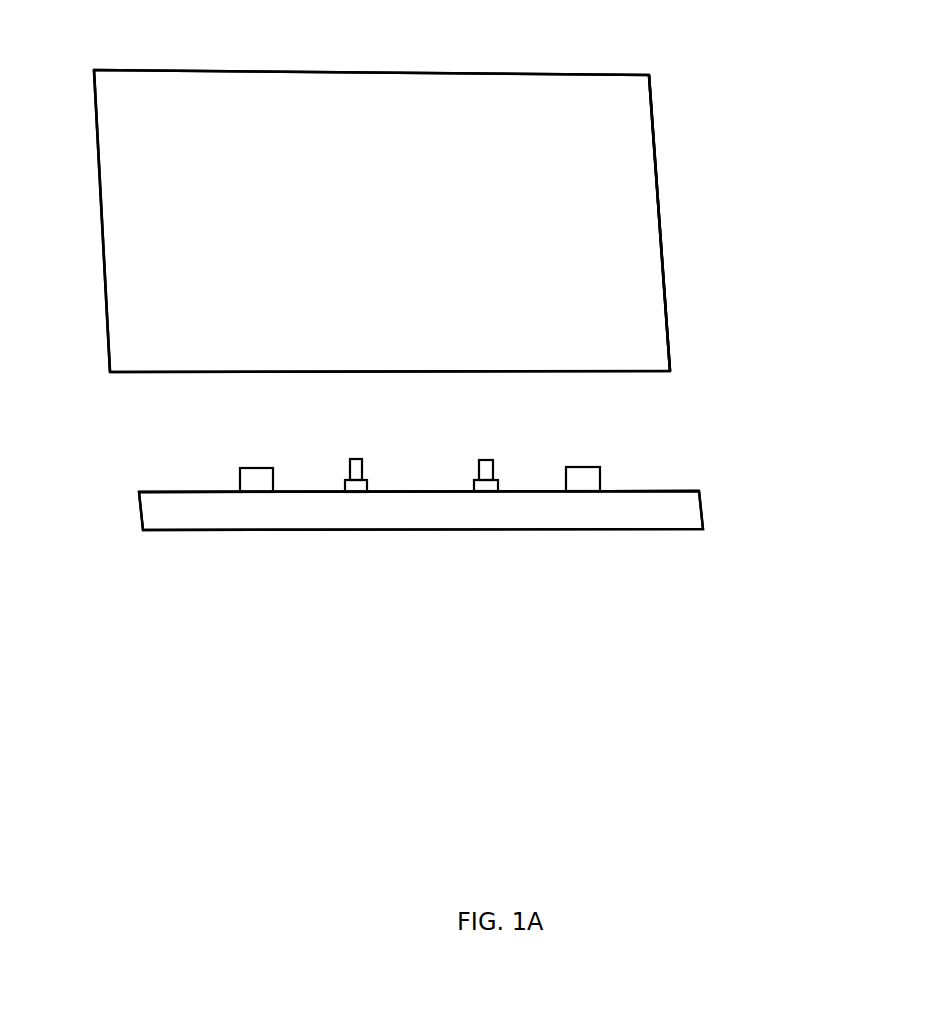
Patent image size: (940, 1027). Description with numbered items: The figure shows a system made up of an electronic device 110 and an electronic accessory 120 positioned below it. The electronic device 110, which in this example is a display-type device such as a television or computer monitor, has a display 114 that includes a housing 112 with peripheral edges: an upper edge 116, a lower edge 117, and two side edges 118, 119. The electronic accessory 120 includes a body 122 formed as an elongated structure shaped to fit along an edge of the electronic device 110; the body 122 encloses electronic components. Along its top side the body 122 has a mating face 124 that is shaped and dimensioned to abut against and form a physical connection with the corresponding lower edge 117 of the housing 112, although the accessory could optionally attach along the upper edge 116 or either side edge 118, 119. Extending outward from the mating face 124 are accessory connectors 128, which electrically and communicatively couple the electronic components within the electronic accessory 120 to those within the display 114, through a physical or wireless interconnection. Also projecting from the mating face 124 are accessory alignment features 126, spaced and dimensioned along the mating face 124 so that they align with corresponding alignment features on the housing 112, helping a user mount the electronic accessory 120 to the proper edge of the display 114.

The electronic device 110 is at (858, 232).
The housing 112 is at (363, 201).
The display 114 is at (685, 238).
The upper edge 116 is at (346, 72).
The lower edge 117 is at (216, 373).
The side edge 118 is at (94, 96).
The side edge 119 is at (652, 95).
The electronic accessory 120 is at (787, 482).
The body 122 is at (215, 520).
The mating face 124 is at (177, 491).
The accessory alignment features 126 is at (240, 472).
The accessory connectors 128 is at (350, 463).